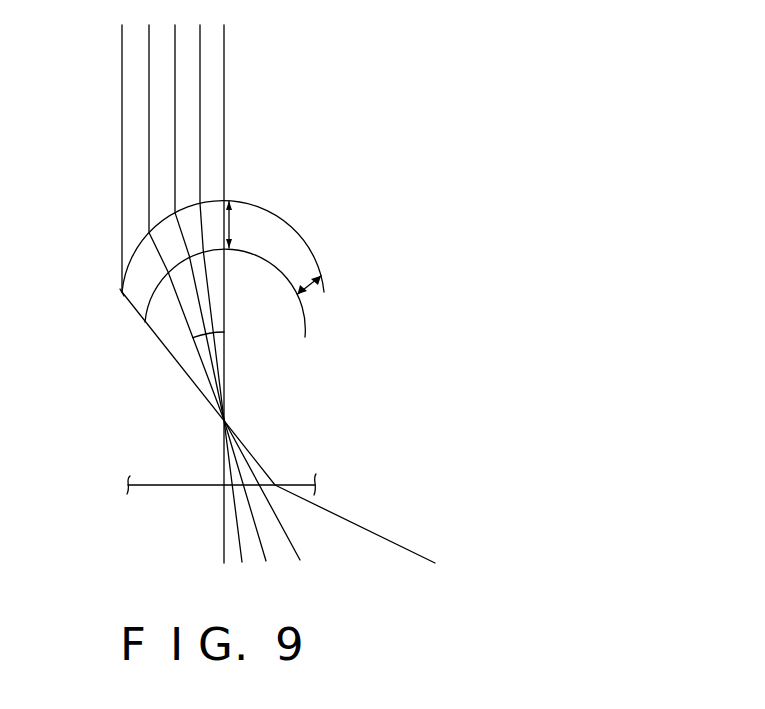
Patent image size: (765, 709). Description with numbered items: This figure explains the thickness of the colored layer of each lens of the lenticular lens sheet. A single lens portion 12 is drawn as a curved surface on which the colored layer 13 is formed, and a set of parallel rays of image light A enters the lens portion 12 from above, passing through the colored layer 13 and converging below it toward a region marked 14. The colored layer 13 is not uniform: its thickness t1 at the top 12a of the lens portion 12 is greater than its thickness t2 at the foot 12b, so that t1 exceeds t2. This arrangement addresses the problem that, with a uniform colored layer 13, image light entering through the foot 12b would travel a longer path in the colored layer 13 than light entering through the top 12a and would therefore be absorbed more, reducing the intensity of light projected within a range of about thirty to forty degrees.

The lens portion 12 is at (213, 233).
The top 12a is at (229, 196).
The foot 12b is at (120, 292).
The colored layer 13 is at (285, 252).
The light receiving region 14 is at (168, 487).
The incident light A is at (225, 88).
The thickness at the top t1 is at (240, 224).
The thickness at the foot t2 is at (312, 303).